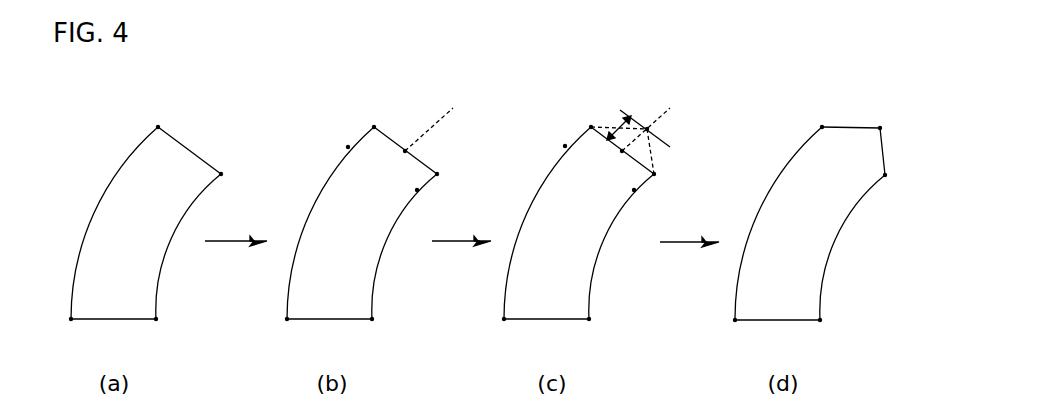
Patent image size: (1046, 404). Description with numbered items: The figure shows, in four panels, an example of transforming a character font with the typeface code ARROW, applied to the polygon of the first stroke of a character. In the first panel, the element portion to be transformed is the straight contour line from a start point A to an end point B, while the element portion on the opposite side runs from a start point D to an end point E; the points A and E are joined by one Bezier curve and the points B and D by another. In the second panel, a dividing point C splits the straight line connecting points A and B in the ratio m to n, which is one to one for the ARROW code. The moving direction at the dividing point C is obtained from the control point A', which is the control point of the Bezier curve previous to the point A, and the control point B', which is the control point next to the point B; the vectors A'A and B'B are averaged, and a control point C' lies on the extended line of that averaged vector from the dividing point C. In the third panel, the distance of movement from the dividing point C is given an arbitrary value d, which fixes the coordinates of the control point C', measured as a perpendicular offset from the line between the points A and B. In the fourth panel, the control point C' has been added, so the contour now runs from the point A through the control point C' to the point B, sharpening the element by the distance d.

The start point A is at (477, 121).
The end point B is at (565, 180).
The dividing point C is at (506, 162).
The start point D is at (498, 332).
The end point E is at (394, 332).
The control point A' is at (441, 150).
The control point B' is at (537, 202).
The control point C' is at (778, 126).
The distance of movement d is at (618, 122).